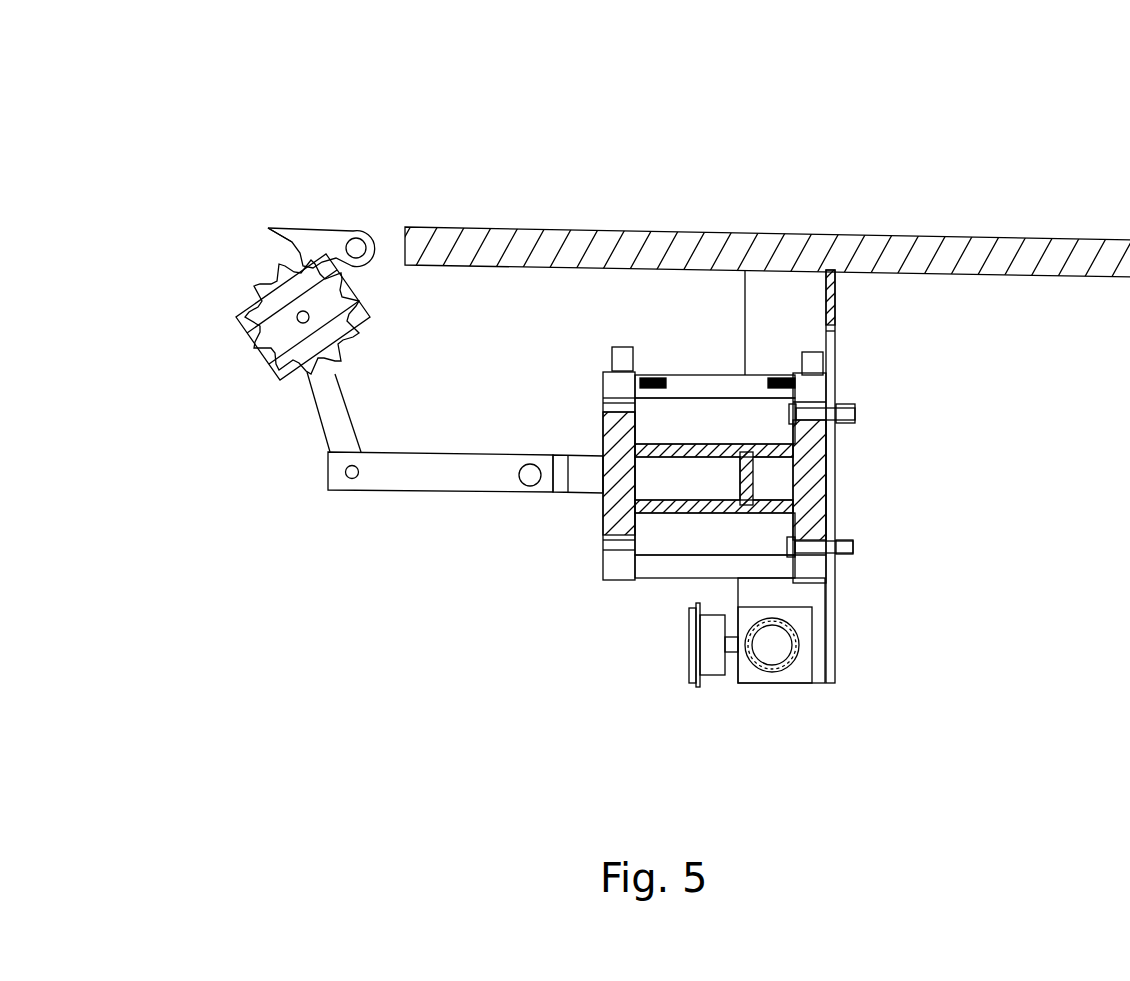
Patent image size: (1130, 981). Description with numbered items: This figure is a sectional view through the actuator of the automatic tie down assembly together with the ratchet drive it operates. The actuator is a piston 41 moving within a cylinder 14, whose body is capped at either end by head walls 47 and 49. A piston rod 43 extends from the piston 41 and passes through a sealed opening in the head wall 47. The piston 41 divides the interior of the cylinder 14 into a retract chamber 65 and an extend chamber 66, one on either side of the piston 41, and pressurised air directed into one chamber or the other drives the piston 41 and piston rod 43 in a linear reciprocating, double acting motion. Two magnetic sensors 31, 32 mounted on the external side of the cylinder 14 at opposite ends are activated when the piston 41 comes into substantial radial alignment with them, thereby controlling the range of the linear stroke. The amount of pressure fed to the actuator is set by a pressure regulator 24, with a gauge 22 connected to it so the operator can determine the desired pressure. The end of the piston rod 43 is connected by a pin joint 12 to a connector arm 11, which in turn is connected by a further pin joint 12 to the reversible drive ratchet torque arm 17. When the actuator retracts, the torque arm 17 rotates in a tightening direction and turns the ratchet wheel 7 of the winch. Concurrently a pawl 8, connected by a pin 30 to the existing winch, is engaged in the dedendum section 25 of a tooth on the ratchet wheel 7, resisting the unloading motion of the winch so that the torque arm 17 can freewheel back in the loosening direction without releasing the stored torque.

The ratchet wheel 7 is at (268, 300).
The pawl 8 is at (323, 243).
The dedendum section 25 is at (297, 235).
The pin 30 is at (357, 247).
The drive ratchet torque arm 17 is at (335, 413).
The connector arm 11 is at (450, 470).
The pin joint 12 is at (350, 480).
The piston rod 43 is at (587, 473).
The head wall 47 is at (622, 458).
The magnetic sensor 32 is at (652, 375).
The magnetic sensor 31 is at (782, 378).
The cylinder 14 is at (718, 443).
The piston 41 is at (758, 470).
The retract chamber 65 is at (658, 500).
The head wall 49 is at (808, 485).
The extend chamber 66 is at (772, 477).
The pressure regulator 24 is at (772, 645).
The gauge 22 is at (712, 642).